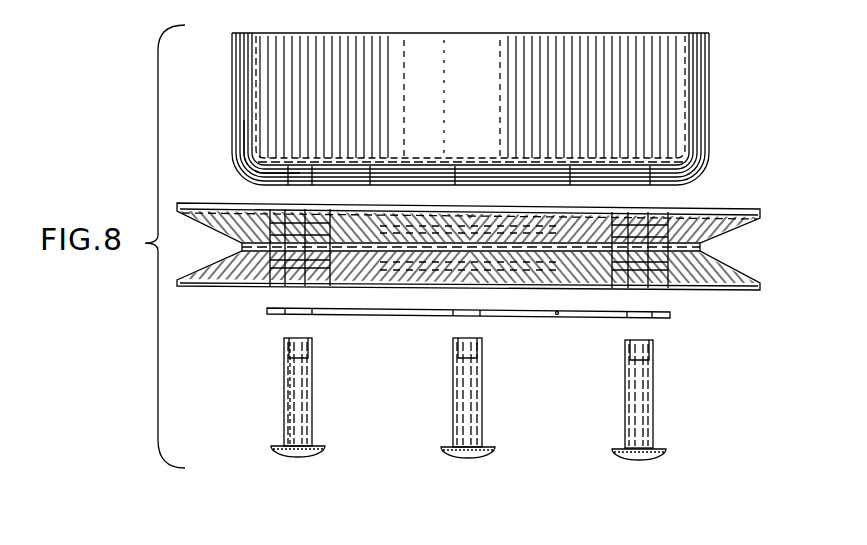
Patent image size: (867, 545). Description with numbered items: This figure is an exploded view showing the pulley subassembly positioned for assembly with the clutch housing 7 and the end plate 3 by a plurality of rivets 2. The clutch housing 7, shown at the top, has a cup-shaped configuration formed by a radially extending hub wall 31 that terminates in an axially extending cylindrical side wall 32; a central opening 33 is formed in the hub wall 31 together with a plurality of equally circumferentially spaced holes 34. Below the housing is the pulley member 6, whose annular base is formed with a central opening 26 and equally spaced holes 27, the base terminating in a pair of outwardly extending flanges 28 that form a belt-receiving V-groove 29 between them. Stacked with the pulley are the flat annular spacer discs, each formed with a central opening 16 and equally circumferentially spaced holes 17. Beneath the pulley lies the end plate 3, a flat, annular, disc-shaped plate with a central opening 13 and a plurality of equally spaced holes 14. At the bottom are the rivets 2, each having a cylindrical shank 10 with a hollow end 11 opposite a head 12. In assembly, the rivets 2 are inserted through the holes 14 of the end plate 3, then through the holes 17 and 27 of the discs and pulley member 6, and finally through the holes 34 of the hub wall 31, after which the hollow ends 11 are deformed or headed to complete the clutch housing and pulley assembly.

The rivet 2 is at (283, 397).
The end plate 3 is at (660, 320).
The pulley member 6 is at (712, 282).
The clutch housing 7 is at (660, 92).
The shank 10 is at (302, 420).
The hollow end 11 is at (308, 356).
The head 12 is at (462, 457).
The central opening 13 is at (556, 318).
The holes 14 is at (290, 316).
The central opening 16 is at (578, 206).
The holes 17 is at (683, 210).
The central opening 26 is at (342, 255).
The holes 27 is at (252, 205).
The flanges 28 is at (212, 281).
The belt-receiving V-groove 29 is at (740, 243).
The hub wall 31 is at (388, 183).
The cylindrical side wall 32 is at (456, 103).
The central opening 33 is at (570, 178).
The holes 34 is at (283, 164).